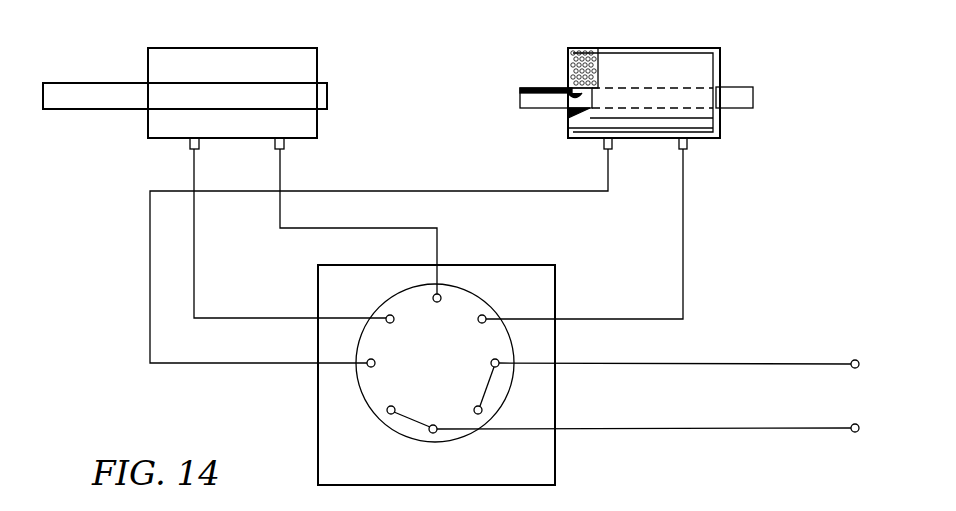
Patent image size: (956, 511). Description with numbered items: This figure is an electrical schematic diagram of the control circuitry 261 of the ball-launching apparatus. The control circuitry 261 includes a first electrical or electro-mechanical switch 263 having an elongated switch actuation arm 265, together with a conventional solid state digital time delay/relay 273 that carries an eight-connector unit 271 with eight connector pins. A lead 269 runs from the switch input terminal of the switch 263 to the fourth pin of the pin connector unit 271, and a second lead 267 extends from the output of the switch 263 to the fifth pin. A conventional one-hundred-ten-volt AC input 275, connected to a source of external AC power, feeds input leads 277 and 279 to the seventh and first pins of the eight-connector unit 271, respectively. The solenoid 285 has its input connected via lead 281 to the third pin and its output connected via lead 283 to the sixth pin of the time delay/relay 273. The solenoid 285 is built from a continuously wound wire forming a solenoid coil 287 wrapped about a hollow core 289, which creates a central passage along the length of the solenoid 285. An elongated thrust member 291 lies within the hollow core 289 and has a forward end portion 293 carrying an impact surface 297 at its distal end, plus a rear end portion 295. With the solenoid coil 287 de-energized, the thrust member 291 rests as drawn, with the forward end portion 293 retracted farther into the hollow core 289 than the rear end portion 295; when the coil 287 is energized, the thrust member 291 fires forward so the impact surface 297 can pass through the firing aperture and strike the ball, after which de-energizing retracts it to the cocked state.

The control circuitry 261 is at (425, 80).
The switch 263 is at (320, 70).
The switch actuation arm 265 is at (113, 68).
The second lead 267 is at (370, 218).
The lead 269 is at (195, 226).
The eight-connector unit 271 is at (449, 356).
The time delay/relay 273 is at (457, 352).
The 110V AC input 275 is at (880, 390).
The input lead 277 is at (794, 338).
The input lead 279 is at (777, 428).
The lead 281 is at (483, 191).
The lead 283 is at (683, 283).
The solenoid 285 is at (647, 84).
The solenoid coil 287 is at (585, 48).
The hollow core 289 is at (567, 90).
The thrust member 291 is at (595, 96).
The forward end portion 293 is at (732, 110).
The rear end portion 295 is at (530, 88).
The impact surface 297 is at (754, 97).